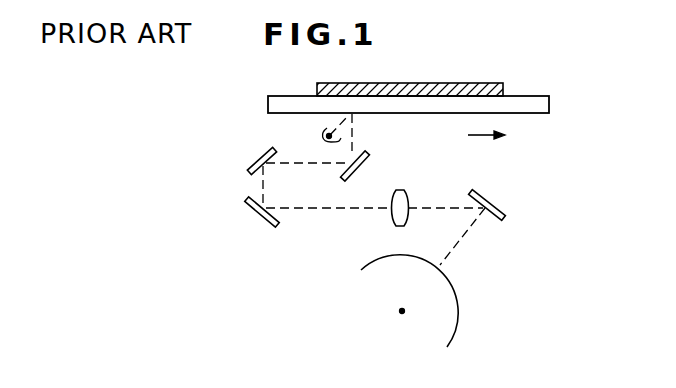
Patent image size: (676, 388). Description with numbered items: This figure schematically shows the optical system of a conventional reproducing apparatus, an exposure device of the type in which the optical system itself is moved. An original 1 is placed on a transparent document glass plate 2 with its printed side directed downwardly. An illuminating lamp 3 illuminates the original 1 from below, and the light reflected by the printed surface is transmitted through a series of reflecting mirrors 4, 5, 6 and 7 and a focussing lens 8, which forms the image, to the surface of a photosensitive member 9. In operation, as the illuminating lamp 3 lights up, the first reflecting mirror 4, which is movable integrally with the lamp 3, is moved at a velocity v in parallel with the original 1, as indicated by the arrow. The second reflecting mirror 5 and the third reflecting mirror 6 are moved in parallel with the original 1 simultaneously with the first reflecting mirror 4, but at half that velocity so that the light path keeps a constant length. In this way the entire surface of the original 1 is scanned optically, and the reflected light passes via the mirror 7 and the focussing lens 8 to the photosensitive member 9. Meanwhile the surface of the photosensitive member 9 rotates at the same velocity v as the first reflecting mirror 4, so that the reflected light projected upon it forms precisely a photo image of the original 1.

The original 1 is at (470, 83).
The transparent document glass plate 2 is at (549, 108).
The illuminating lamp 3 is at (326, 139).
The first reflecting mirror 4 is at (368, 162).
The second reflecting mirror 5 is at (246, 164).
The third reflecting mirror 6 is at (258, 218).
The reflecting mirror 7 is at (497, 201).
The focussing lens 8 is at (393, 222).
The photosensitive member 9 is at (461, 298).